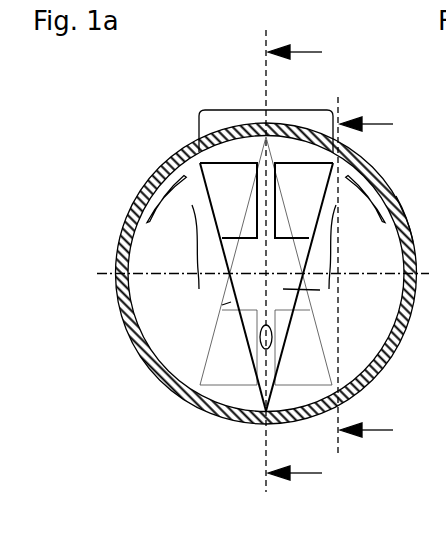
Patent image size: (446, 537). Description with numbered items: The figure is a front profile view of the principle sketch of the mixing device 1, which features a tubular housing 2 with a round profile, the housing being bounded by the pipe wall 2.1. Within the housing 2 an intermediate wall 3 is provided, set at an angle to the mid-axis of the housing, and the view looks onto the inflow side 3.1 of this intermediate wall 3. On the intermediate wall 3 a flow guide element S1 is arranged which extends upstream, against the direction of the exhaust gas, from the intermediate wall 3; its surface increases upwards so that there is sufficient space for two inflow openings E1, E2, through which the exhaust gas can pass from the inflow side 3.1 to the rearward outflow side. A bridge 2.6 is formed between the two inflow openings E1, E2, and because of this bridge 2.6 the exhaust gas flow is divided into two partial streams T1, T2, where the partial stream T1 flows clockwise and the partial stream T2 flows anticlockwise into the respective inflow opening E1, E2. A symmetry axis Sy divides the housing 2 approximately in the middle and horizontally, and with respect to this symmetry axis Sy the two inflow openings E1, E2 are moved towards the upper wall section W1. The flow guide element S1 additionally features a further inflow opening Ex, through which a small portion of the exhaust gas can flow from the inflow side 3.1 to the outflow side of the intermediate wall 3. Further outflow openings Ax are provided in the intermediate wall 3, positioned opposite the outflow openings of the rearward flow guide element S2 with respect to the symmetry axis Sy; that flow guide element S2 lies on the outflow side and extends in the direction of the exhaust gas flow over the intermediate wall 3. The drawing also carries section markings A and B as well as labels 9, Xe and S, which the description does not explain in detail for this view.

The mixing device 1 is at (100, 127).
The tubular housing 2 is at (402, 206).
The pipe wall 2.1 is at (167, 381).
The bridge 2.6 is at (268, 214).
The intermediate wall 3 is at (193, 316).
The inflow side 3.1 is at (172, 350).
The element 9 is at (440, 300).
The inflow opening E1 is at (222, 173).
The inflow opening E2 is at (316, 177).
The upper wall section W1 is at (226, 110).
The partial stream T1 is at (230, 197).
The partial stream T2 is at (300, 197).
The flow guide element S1 is at (320, 290).
The flow guide element S2 is at (231, 302).
The symmetry axis Sy is at (97, 273).
The further inflow opening Ex is at (152, 180).
The xenon / electron spot (Xe, e) Xe is at (265, 348).
The section A- A is at (295, 266).
The section B- B is at (366, 278).
The element S is at (438, 223).
The further outflow openings Ax is at (432, 331).